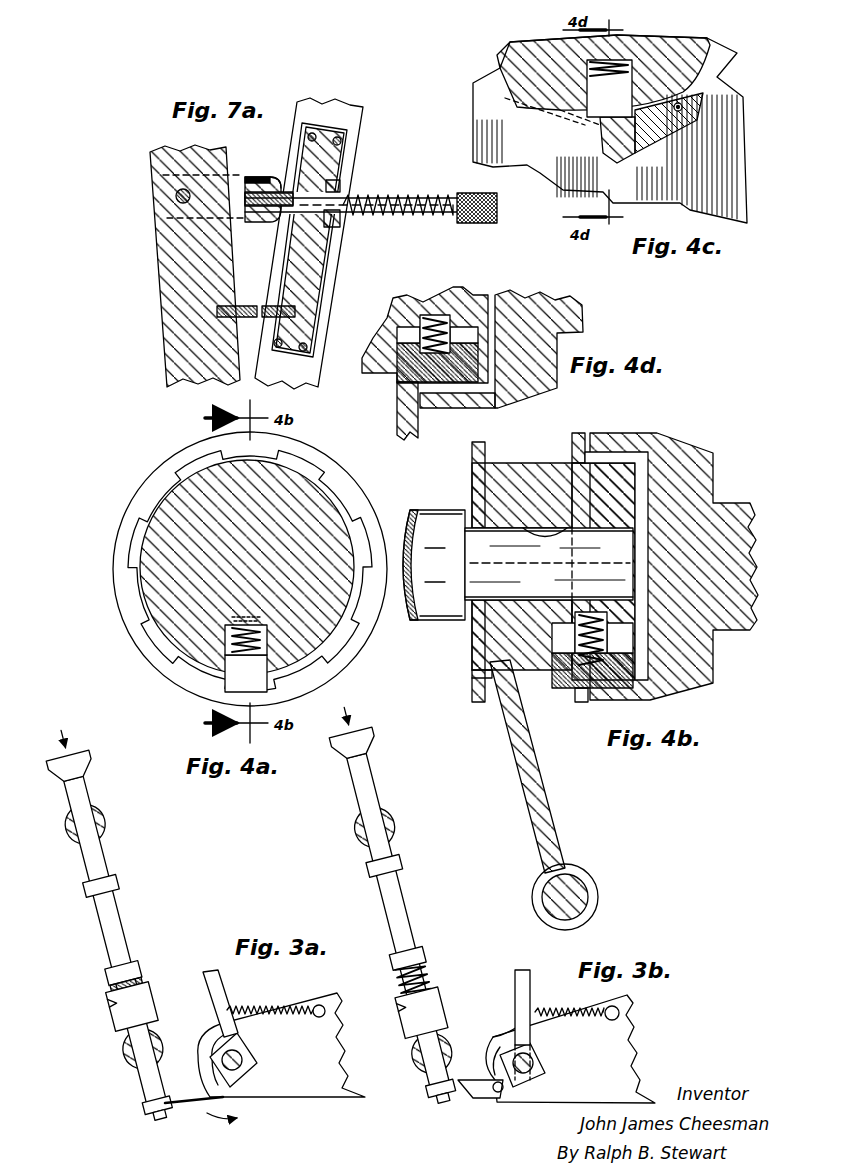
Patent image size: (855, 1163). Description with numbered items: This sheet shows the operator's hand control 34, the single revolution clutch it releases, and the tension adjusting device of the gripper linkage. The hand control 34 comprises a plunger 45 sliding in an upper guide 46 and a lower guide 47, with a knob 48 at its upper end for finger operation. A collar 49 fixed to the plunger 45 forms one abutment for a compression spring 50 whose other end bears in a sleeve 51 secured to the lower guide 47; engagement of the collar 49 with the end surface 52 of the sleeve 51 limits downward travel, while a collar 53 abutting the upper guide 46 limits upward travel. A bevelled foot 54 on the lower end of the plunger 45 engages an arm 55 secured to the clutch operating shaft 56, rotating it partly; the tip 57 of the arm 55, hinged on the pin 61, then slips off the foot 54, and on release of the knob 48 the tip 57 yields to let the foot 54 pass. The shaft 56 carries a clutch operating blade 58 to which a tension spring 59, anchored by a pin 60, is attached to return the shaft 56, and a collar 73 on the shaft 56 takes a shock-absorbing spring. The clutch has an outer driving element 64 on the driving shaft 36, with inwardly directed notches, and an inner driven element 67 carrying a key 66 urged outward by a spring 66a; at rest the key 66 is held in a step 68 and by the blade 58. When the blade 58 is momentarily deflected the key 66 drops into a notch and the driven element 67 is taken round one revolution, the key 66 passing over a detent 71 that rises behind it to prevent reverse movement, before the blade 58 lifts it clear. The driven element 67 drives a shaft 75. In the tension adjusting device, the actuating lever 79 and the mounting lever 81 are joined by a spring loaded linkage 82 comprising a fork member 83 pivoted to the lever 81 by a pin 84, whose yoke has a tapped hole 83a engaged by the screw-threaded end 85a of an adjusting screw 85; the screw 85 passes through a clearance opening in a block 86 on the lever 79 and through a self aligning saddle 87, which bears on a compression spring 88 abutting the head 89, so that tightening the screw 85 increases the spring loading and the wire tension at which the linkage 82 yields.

In FIG. 3A, the hand control 34 is at (114, 926).
In FIG. 3B, the hand control 34 is at (401, 911).
In FIG. 4D, the driving shaft 36 is at (572, 305).
In FIG. 4B, the driving shaft 36 is at (745, 509).
In FIG. 3A, the plunger 45 is at (92, 803).
In FIG. 3B, the plunger 45 is at (372, 796).
In FIG. 3A, the upper guide 46 is at (110, 823).
In FIG. 3B, the upper guide 46 is at (386, 826).
In FIG. 3A, the lower guide 47 is at (122, 1051).
In FIG. 3B, the lower guide 47 is at (413, 1056).
In FIG. 3A, the knob 48 is at (93, 763).
In FIG. 3B, the knob 48 is at (377, 753).
In FIG. 3A, the collar 49 is at (134, 970).
In FIG. 3B, the collar 49 is at (421, 955).
In FIG. 3A, the compression spring 50 is at (143, 985).
In FIG. 3B, the compression spring 50 is at (430, 974).
In FIG. 3A, the sleeve 51 is at (150, 1007).
In FIG. 3B, the sleeve 51 is at (440, 1001).
In FIG. 3A, the end surface 52 is at (121, 997).
In FIG. 3B, the end surface 52 is at (404, 1005).
In FIG. 3A, the collar 53 is at (124, 885).
In FIG. 3B, the collar 53 is at (404, 862).
In FIG. 3A, the bevelled foot 54 is at (145, 1107).
In FIG. 3B, the bevelled foot 54 is at (428, 1093).
In FIG. 3A, the arm 55 is at (198, 1092).
In FIG. 3B, the arm 55 is at (487, 1061).
In FIG. 4B, the clutch operating shaft 56 is at (576, 885).
In FIG. 3A, the clutch operating shaft 56 is at (241, 1053).
In FIG. 3B, the clutch operating shaft 56 is at (533, 1061).
In FIG. 3A, the tip 57 is at (208, 1108).
In FIG. 3B, the tip 57 is at (467, 1099).
In FIG. 4C, the clutch operating blade 58 is at (537, 151).
In FIG. 4D, the clutch operating blade 58 is at (396, 409).
In FIG. 4B, the clutch operating blade 58 is at (540, 785).
In FIG. 3A, the clutch operating blade 58 is at (210, 1009).
In FIG. 3B, the clutch operating blade 58 is at (522, 971).
In FIG. 3A, the tension spring 59 is at (266, 1008).
In FIG. 3B, the tension spring 59 is at (566, 1010).
In FIG. 3A, the pin 60 is at (316, 1018).
In FIG. 3B, the pin 60 is at (611, 1021).
In FIG. 3A, the hinge pin 61 is at (209, 1058).
In FIG. 3B, the hinge pin 61 is at (506, 1094).
In FIG. 4C, the outer or driving element 64 is at (492, 66).
In FIG. 4D, the outer or driving element 64 is at (468, 401).
In FIG. 4A, the outer or driving element 64 is at (138, 494).
In FIG. 4B, the outer or driving element 64 is at (614, 441).
In FIG. 4C, the key 66 is at (598, 113).
In FIG. 4D, the key 66 is at (450, 383).
In FIG. 4A, the key 66 is at (258, 687).
In FIG. 4B, the key 66 is at (563, 689).
In FIG. 4C, the spring 66a is at (609, 88).
In FIG. 4D, the spring 66a is at (435, 315).
In FIG. 4A, the spring 66a is at (223, 648).
In FIG. 4B, the spring 66a is at (606, 638).
In FIG. 4B, the inner or driven element 67 is at (523, 465).
In FIG. 4B, the step 68 is at (488, 680).
In FIG. 4C, the detent 71 is at (683, 109).
In FIG. 4B, the collar 73 is at (600, 901).
In FIG. 4C, the shaft 75 is at (671, 45).
In FIG. 4D, the shaft 75 is at (385, 318).
In FIG. 4A, the shaft 75 is at (170, 620).
In FIG. 4B, the shaft 75 is at (415, 620).
In FIG. 7A, the actuating lever 79 is at (338, 274).
In FIG. 7A, the mounting lever 81 is at (160, 250).
In FIG. 7A, the spring loaded linkage 82 is at (370, 192).
In FIG. 7A, the fork member 83 is at (215, 217).
In FIG. 7A, the tapped hole 83a is at (242, 176).
In FIG. 7A, the pin 84 is at (176, 197).
In FIG. 7A, the adjusting screw 85 is at (272, 223).
In FIG. 7A, the screw-threaded end 85a is at (279, 177).
In FIG. 7A, the block 86 is at (290, 259).
In FIG. 7A, the self aligning saddle 87 is at (336, 227).
In FIG. 7A, the compression spring 88 is at (418, 227).
In FIG. 7A, the head 89 is at (470, 227).